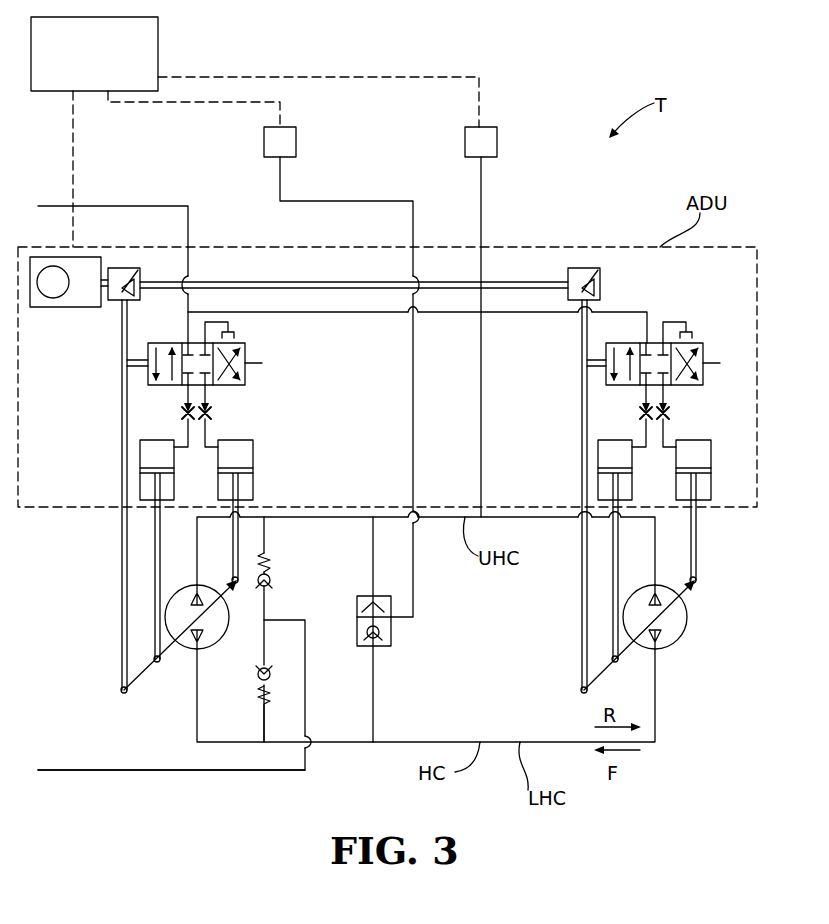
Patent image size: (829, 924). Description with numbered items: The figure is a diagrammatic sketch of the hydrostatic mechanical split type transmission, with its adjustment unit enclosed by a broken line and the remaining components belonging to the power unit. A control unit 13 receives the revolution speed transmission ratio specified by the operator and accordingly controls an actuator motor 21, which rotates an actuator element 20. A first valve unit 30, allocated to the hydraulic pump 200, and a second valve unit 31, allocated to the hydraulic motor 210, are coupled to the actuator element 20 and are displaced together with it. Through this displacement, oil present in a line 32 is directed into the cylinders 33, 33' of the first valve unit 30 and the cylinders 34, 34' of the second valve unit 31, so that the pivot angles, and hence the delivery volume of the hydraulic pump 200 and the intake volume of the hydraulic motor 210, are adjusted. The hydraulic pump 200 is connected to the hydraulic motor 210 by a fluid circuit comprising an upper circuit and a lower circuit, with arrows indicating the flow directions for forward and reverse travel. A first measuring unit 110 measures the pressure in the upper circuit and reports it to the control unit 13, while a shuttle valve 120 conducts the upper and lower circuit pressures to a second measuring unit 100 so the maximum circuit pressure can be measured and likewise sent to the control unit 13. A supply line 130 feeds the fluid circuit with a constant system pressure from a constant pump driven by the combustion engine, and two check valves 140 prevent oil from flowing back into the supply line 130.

The control unit 13 is at (147, 52).
The second measuring unit 100 is at (296, 142).
The first measuring unit 110 is at (497, 142).
The line 32 is at (145, 206).
The actuator element 20 is at (275, 282).
The actuator motor 21 is at (40, 306).
The first valve unit 30 is at (245, 363).
The second valve unit 31 is at (703, 363).
The cylinder 33 is at (153, 528).
The cylinder 33' is at (267, 489).
The cylinder 34 is at (614, 528).
The cylinder 34' is at (705, 489).
The hydraulic pump 200 is at (215, 632).
The hydraulic motor 210 is at (688, 620).
The check valve 140 is at (270, 580).
The shuttle valve 120 is at (391, 637).
The supply line 130 is at (240, 772).